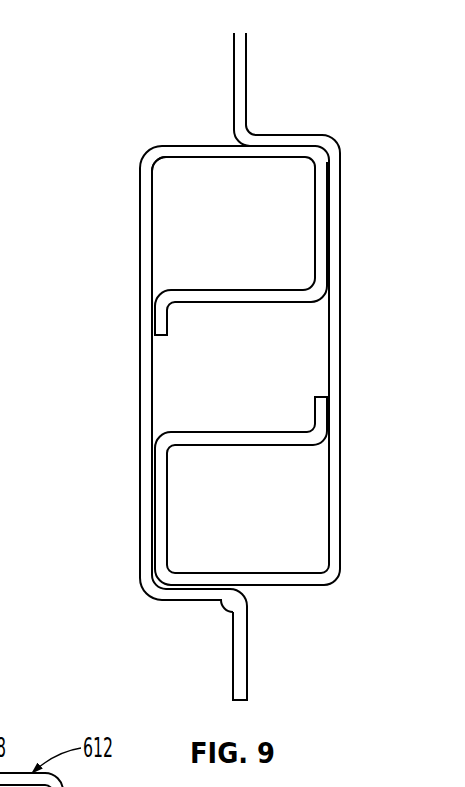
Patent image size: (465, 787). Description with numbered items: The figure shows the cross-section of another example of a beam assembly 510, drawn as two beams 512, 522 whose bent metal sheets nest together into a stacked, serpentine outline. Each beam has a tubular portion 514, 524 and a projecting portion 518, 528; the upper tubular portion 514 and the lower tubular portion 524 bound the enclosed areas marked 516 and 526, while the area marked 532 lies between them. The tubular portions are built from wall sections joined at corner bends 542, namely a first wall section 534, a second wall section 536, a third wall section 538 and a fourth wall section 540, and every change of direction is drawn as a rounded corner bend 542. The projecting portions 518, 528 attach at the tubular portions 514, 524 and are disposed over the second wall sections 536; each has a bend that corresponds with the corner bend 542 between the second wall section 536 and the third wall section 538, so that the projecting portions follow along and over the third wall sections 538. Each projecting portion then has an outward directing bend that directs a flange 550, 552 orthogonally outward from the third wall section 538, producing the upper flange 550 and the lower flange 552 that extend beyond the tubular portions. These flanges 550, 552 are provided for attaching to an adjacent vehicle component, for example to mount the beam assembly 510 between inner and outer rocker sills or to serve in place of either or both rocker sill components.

The beam assembly 510 is at (108, 162).
The top portion 512 is at (306, 132).
The tubular portion 514 is at (179, 146).
The first region 516 is at (262, 237).
The projecting portion 518 is at (343, 347).
The bottom-left bend portion 522 is at (179, 600).
The tubular portion 524 is at (307, 599).
The third region 526 is at (262, 525).
The projecting portion 528 is at (138, 390).
The second region 532 is at (262, 393).
The intermediate fold 534 is at (226, 290).
The second wall section 536 is at (327, 215).
The third wall section 538 is at (220, 146).
The outer wall 540 is at (140, 224).
The corner bend 542 is at (159, 160).
The flange 550 is at (247, 48).
The flange 552 is at (248, 655).